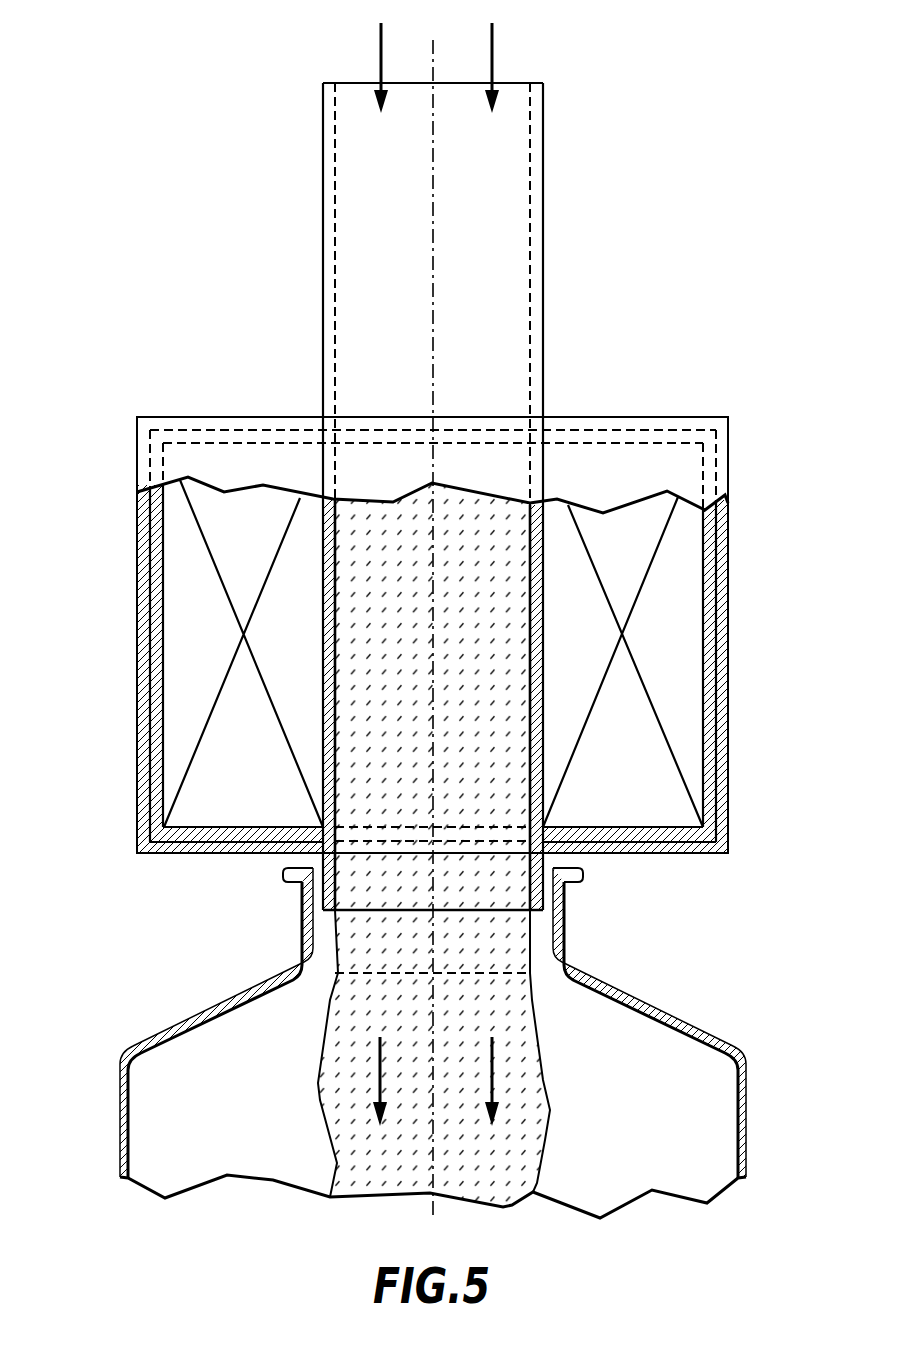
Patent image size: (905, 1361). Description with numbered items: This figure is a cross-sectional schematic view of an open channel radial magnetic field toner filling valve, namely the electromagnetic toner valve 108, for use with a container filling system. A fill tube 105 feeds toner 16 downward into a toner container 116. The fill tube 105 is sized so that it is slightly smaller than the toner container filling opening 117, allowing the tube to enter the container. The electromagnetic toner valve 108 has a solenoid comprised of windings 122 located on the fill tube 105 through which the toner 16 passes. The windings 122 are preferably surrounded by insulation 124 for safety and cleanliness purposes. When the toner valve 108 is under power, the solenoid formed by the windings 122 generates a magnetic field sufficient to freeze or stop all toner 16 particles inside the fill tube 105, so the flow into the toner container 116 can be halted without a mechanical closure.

The toner 16 is at (381, 55).
The electromagnetic toner valve 108 is at (728, 505).
The insulation 124 is at (150, 625).
The windings 122 is at (662, 723).
The fill tube 105 is at (548, 857).
The toner container filling opening 117 is at (585, 880).
The toner container 116 is at (207, 1013).